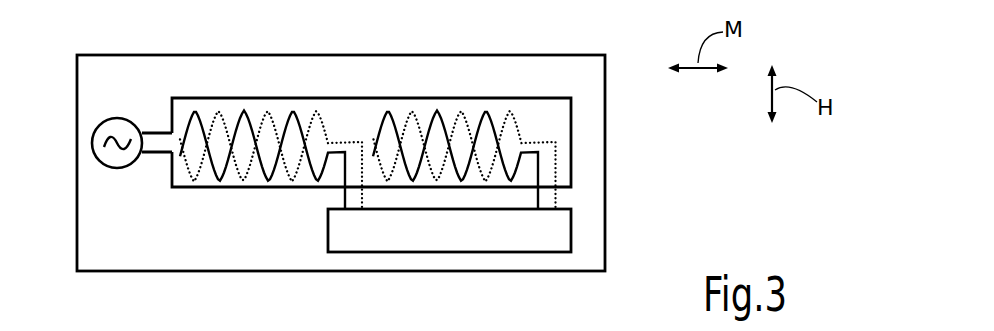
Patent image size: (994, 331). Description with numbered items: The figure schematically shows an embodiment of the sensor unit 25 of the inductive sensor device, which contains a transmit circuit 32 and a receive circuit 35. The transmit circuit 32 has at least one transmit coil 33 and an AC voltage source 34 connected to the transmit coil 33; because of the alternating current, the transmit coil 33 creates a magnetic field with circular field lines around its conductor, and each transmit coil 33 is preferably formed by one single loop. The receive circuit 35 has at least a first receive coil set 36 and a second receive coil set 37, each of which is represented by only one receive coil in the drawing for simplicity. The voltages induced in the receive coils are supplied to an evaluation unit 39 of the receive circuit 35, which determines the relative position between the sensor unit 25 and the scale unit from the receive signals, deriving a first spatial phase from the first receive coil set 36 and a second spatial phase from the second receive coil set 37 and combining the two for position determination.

The sensor unit 25 is at (605, 173).
The transmit circuit 32 is at (172, 207).
The transmit coil 33 is at (207, 187).
The AC voltage source 34 is at (132, 168).
The receive circuit 35 is at (584, 199).
The first receive coil set 36 is at (330, 115).
The second receive coil set 37 is at (527, 123).
The evaluation unit 39 is at (470, 237).